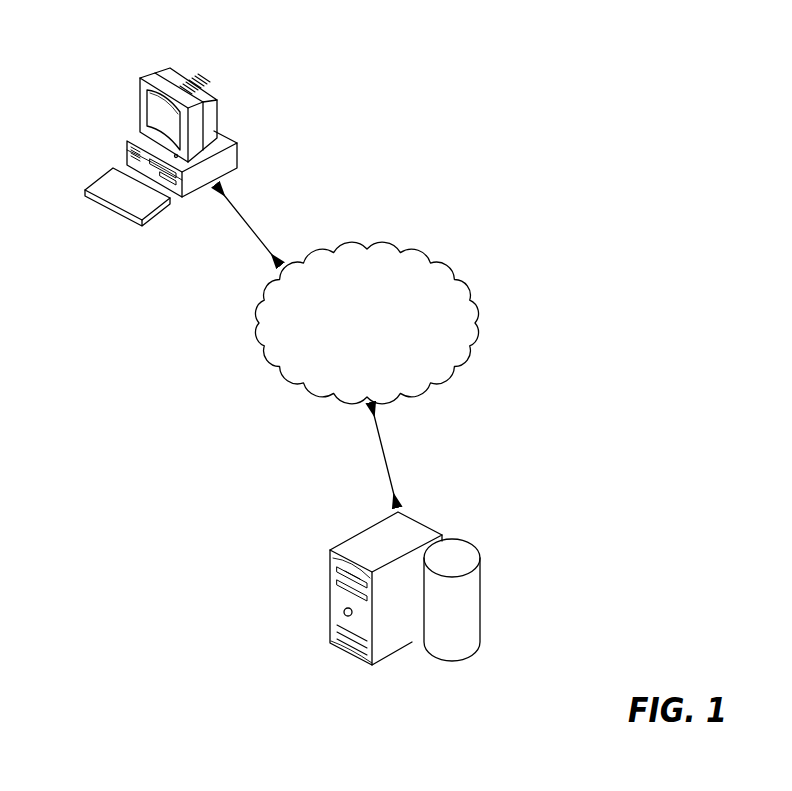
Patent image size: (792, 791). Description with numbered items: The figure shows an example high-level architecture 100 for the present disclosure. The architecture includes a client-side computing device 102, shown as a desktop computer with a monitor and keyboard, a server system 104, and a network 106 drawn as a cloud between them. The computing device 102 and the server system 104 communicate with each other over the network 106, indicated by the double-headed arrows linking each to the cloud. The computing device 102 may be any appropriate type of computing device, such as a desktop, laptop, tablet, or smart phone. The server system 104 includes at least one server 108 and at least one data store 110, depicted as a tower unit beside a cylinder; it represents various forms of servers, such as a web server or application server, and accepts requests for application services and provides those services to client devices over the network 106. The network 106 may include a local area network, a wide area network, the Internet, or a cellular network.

The high-level architecture 100 is at (583, 138).
The computing device 102 is at (140, 79).
The server system 104 is at (490, 502).
The network 106 is at (483, 322).
The server 108 is at (330, 607).
The database 110 is at (482, 588).